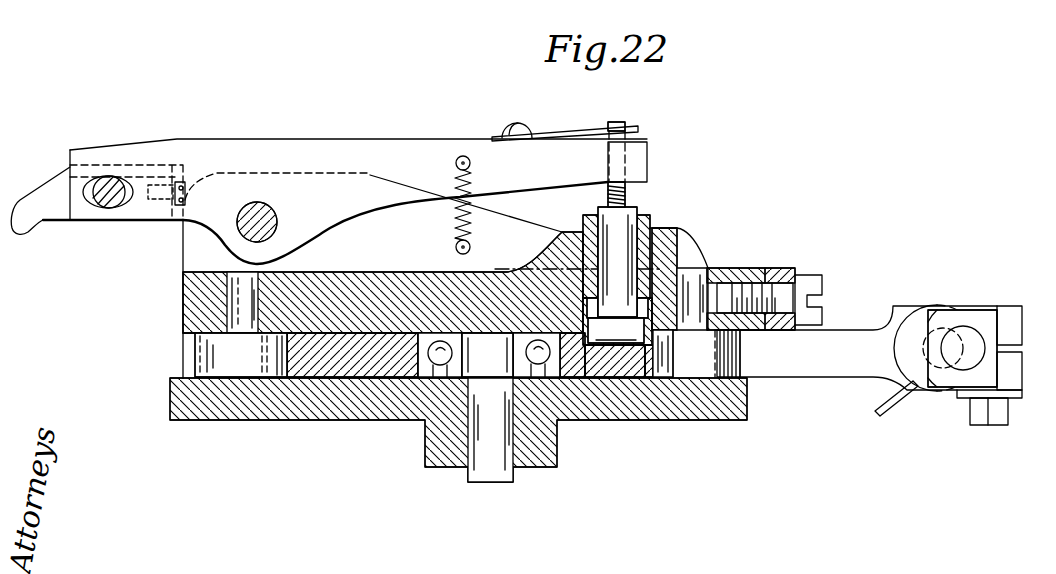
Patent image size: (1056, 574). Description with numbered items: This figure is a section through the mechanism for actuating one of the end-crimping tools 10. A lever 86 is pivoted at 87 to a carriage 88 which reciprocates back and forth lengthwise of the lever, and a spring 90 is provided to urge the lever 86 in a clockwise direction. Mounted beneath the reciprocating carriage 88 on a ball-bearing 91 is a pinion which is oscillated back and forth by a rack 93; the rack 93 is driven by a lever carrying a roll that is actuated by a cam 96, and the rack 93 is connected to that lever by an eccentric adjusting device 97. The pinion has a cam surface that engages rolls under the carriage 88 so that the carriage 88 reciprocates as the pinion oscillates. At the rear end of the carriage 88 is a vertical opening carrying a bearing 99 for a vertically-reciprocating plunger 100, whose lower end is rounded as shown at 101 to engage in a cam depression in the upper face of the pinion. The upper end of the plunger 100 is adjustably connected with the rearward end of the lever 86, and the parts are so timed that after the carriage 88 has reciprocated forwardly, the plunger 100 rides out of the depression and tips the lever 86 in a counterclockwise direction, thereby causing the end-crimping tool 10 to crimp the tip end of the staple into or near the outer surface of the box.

The end-crimping tool 10 is at (52, 207).
The lever 86 is at (305, 145).
The pivot 87 is at (278, 214).
The carriage 88 is at (192, 295).
The spring 90 is at (453, 222).
The ball-bearing 91 is at (455, 353).
The rack 93 is at (790, 366).
The cam 96 is at (208, 353).
The eccentric adjusting device 97 is at (974, 310).
The bearing 99 is at (650, 220).
The plunger 100 is at (627, 217).
The rounded lower end of plunger 101 is at (616, 330).